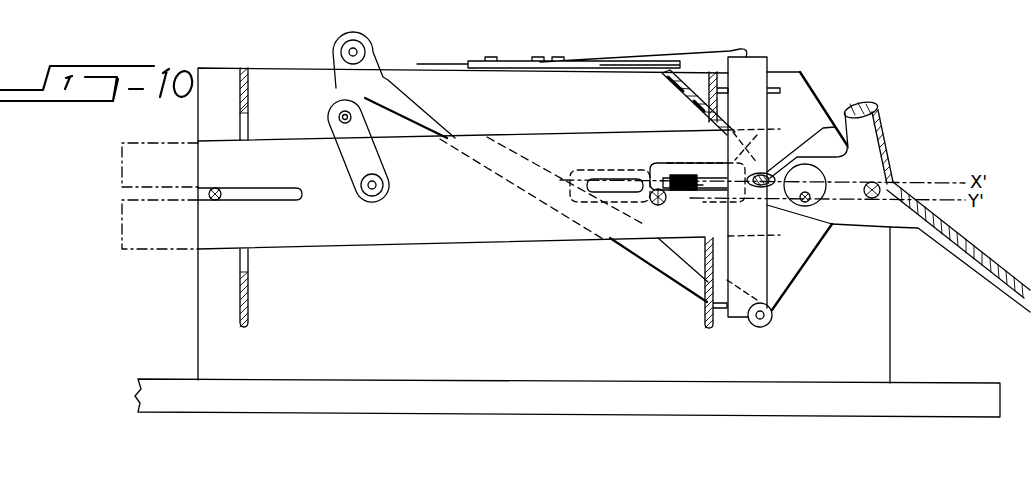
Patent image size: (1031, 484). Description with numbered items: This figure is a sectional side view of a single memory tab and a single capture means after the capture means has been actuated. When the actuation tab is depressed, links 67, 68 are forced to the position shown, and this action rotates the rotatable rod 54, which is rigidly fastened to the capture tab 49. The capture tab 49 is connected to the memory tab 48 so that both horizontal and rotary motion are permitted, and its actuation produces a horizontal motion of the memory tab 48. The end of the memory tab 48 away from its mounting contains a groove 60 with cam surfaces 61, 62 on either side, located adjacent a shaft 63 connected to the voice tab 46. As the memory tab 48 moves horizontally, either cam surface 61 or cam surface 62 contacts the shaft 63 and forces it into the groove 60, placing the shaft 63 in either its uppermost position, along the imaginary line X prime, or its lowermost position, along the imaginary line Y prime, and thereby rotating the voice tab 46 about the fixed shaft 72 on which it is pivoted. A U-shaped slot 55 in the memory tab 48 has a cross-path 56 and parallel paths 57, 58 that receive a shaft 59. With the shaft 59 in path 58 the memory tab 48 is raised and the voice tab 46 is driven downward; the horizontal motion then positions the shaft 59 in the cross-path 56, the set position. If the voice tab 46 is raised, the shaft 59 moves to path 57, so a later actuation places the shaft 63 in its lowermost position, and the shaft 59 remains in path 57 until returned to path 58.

The voice tab 46 is at (968, 262).
The memory tab 48 is at (476, 228).
The capture tab 49 is at (368, 160).
The rotatable rod 54 is at (340, 115).
The U-shaped slot 55 is at (585, 177).
The cross-path 56 is at (640, 157).
The parallel path 57 is at (672, 157).
The parallel path 58 is at (660, 203).
The shaft 59 is at (670, 200).
The groove 60 is at (767, 170).
The cam surface 61 is at (850, 143).
The cam surface 62 is at (840, 233).
The shaft 63 is at (801, 218).
The link 67 is at (372, 74).
The link 68 is at (345, 74).
The fixed shaft 72 is at (880, 187).